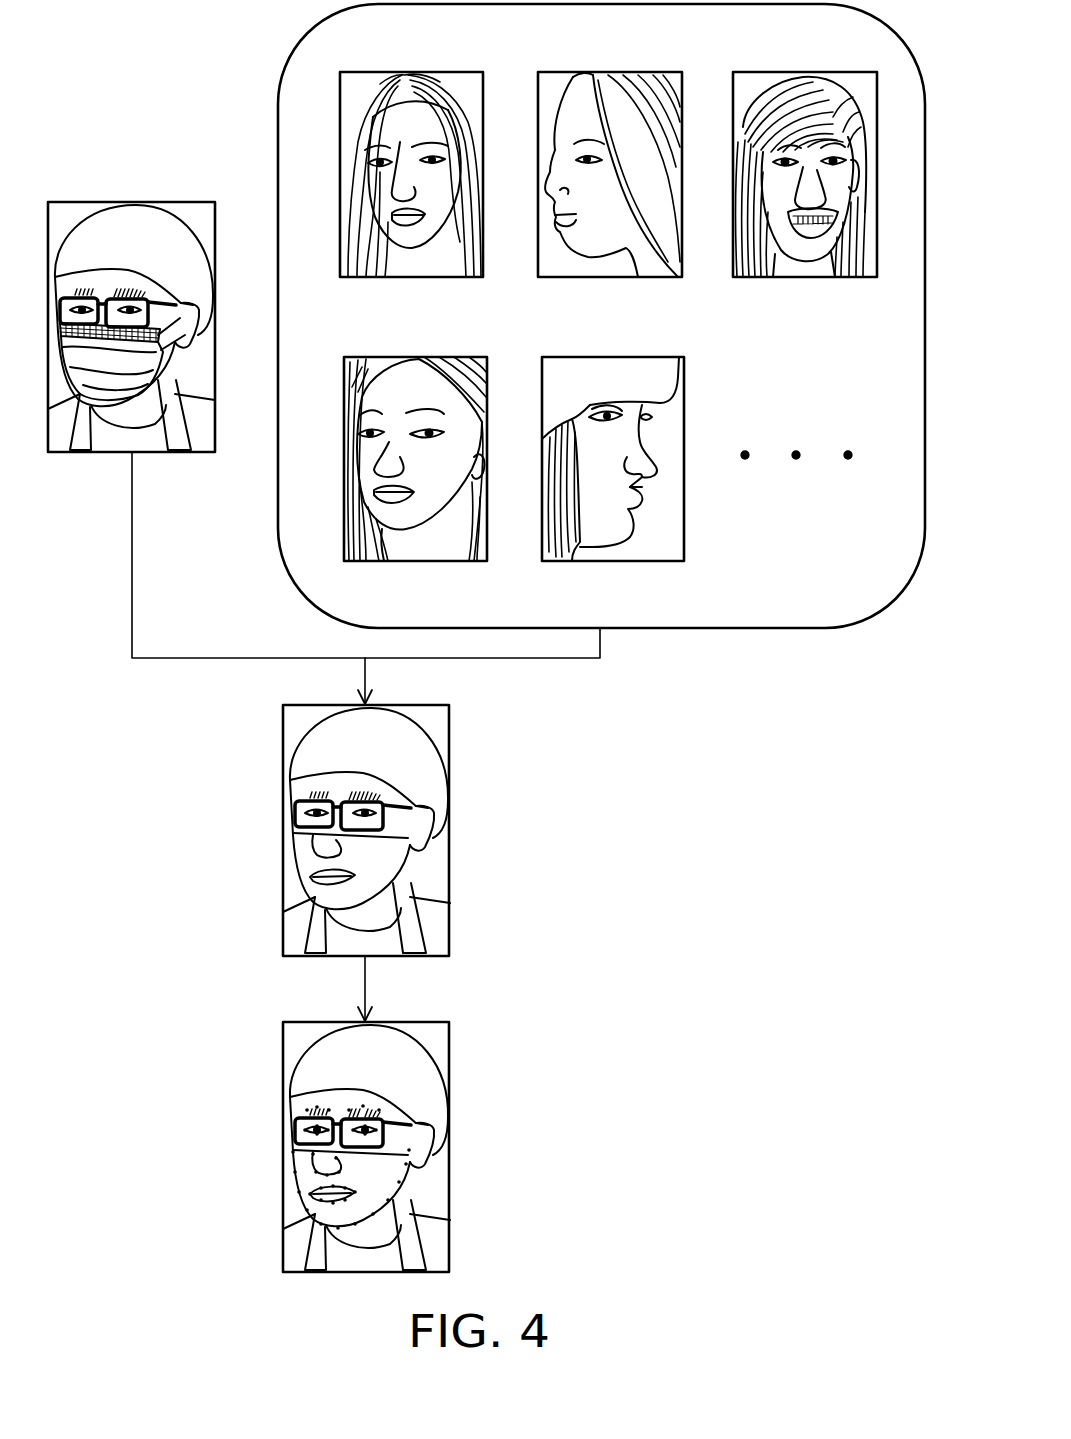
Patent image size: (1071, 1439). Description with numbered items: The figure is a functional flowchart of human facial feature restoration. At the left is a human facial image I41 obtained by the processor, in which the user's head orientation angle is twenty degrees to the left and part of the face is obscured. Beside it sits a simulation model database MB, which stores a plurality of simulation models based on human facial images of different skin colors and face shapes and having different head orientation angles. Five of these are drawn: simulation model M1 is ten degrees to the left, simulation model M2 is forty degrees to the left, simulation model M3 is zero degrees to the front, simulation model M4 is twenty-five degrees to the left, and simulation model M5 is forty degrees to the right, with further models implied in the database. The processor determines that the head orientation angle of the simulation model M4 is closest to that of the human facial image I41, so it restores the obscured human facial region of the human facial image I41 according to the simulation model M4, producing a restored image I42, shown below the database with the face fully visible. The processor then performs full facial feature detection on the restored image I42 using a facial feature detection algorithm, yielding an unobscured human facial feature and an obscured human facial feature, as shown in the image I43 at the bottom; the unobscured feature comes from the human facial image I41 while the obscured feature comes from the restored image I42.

The simulation model database MB is at (310, 30).
The simulation model M1 is at (405, 72).
The simulation model M2 is at (608, 72).
The simulation model M3 is at (787, 72).
The simulation model M4 is at (408, 357).
The simulation model M5 is at (613, 357).
The human facial image I41 is at (124, 202).
The restored image I42 is at (449, 848).
The image I43 is at (449, 1163).